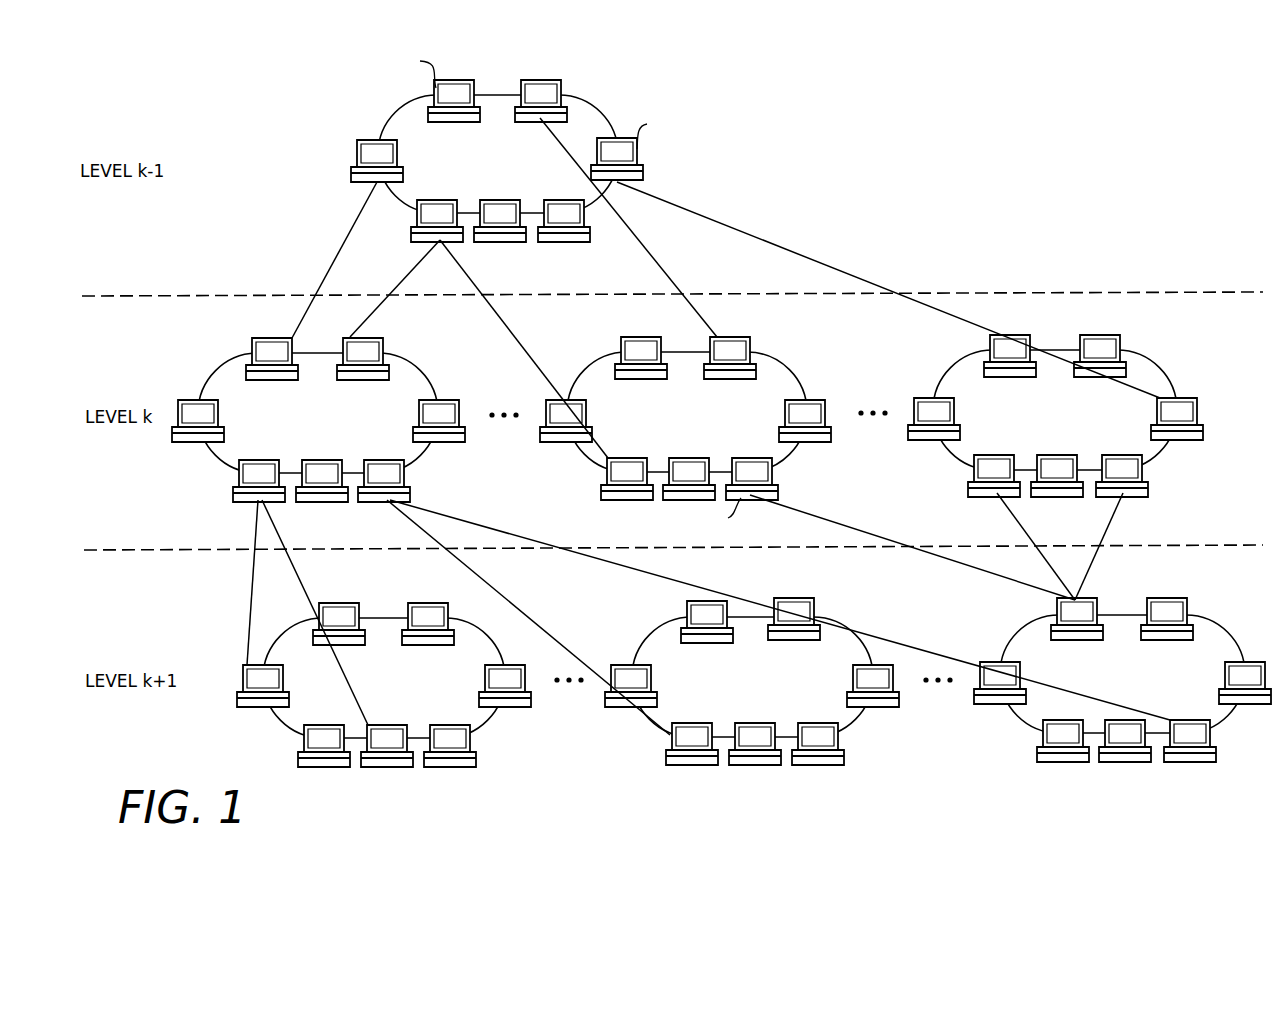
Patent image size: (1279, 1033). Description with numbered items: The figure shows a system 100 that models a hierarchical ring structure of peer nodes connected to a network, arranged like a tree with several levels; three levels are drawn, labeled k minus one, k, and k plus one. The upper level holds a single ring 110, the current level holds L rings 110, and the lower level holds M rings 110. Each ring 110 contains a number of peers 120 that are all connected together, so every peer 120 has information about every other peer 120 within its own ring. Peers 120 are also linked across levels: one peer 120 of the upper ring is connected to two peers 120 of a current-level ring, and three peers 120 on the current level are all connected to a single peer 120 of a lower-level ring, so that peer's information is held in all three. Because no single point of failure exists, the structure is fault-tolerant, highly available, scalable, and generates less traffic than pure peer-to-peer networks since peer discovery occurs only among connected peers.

The system 100 is at (1177, 84).
The ring 110 is at (721, 427).
The peer 120 is at (721, 410).